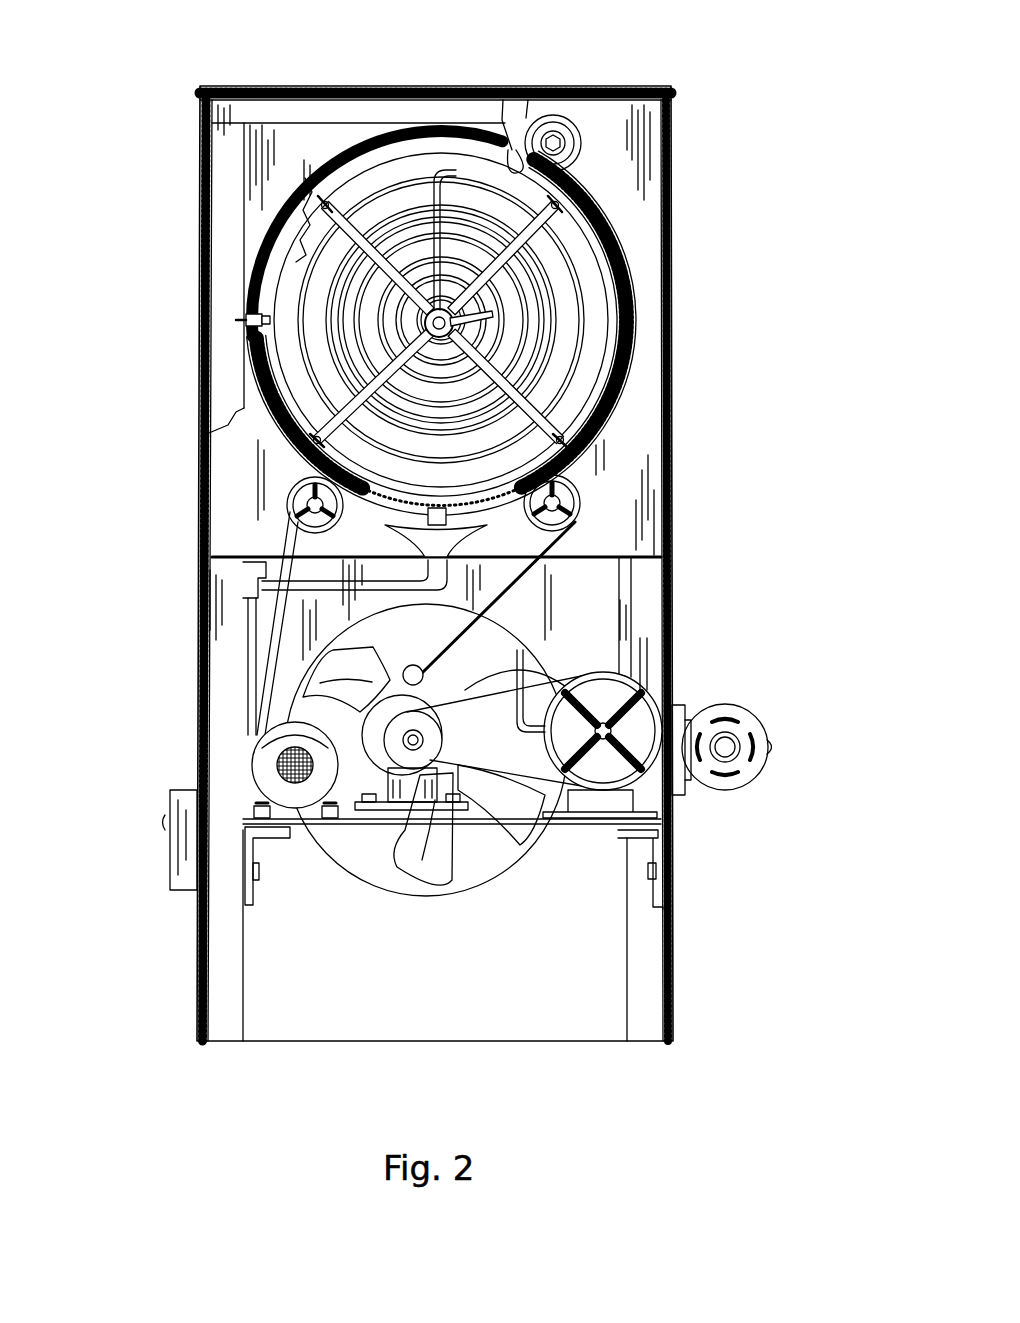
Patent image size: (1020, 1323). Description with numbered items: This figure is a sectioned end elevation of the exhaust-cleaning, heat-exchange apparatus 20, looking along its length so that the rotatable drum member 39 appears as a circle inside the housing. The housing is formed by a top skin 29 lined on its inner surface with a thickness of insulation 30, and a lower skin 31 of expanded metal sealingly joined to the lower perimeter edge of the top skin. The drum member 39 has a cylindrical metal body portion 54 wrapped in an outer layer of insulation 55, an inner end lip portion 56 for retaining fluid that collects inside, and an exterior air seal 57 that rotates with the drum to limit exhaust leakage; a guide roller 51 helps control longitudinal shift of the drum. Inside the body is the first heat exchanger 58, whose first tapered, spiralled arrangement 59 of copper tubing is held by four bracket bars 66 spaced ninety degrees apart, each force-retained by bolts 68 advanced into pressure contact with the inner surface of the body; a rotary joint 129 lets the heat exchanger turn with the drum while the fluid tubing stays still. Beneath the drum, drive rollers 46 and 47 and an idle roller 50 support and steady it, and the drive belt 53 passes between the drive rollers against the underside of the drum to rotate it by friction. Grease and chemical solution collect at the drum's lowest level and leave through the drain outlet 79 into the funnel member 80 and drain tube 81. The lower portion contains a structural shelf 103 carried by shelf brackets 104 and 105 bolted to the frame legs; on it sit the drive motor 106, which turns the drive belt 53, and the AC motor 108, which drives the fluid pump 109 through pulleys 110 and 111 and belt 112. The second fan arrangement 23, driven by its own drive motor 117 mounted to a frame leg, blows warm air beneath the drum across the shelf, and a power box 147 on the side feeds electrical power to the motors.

The exhaust-cleaning, heat-exchange apparatus 20 is at (725, 128).
The second fan arrangement 23 is at (383, 713).
The top skin 29 is at (673, 190).
The insulation 30 is at (435, 88).
The lower skin 31 is at (202, 668).
The drum member 39 is at (415, 168).
The drive roller 46 is at (290, 506).
The drive roller 47 is at (578, 500).
The idle roller 50 is at (578, 122).
The guide roller 51 is at (258, 322).
The drive belt 53 is at (575, 528).
The cylindrical metal body portion 54 is at (507, 152).
The outer layer of insulation 55 is at (606, 403).
The inner end lip portion 56 is at (250, 330).
The exterior air seal 57 is at (297, 187).
The first heat exchanger 58 is at (496, 316).
The first tapered, spiralled arrangement 59 is at (397, 205).
The bracket bar 66 is at (580, 250).
The bolt 68 is at (562, 210).
The drain outlet 79 is at (405, 532).
The funnel member 80 is at (400, 582).
The drain tube 81 is at (249, 698).
The structural shelf 103 is at (345, 812).
The shelf bracket 104 is at (247, 850).
The shelf bracket 105 is at (662, 860).
The drive motor 106 is at (262, 768).
The AC motor 108 is at (272, 826).
The fluid pump 109 is at (652, 678).
The pulley 110 is at (548, 826).
The pulley 111 is at (614, 672).
The belt 112 is at (572, 793).
The drive motor 117 is at (735, 712).
The rotary joint 129 is at (214, 422).
The power box 147 is at (176, 882).